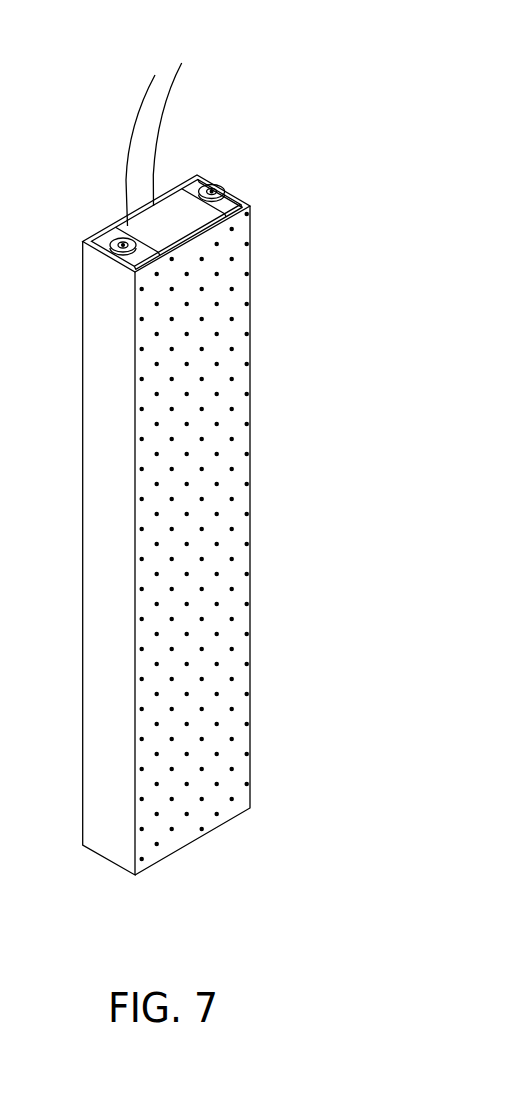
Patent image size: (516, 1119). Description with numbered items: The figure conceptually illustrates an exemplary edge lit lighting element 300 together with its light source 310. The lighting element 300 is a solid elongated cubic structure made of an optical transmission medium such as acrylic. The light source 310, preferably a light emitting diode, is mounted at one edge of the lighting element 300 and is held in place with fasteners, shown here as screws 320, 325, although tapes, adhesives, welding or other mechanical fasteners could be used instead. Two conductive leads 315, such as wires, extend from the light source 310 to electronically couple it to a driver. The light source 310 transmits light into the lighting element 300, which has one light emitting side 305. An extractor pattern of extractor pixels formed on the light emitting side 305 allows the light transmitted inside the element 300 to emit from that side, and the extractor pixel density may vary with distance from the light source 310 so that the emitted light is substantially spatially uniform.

The lighting element 300 is at (263, 528).
The light emitting side 305 is at (225, 792).
The light source 310 is at (134, 227).
The conductive leads 315 is at (165, 126).
The screw 320 is at (118, 246).
The screw 325 is at (214, 192).